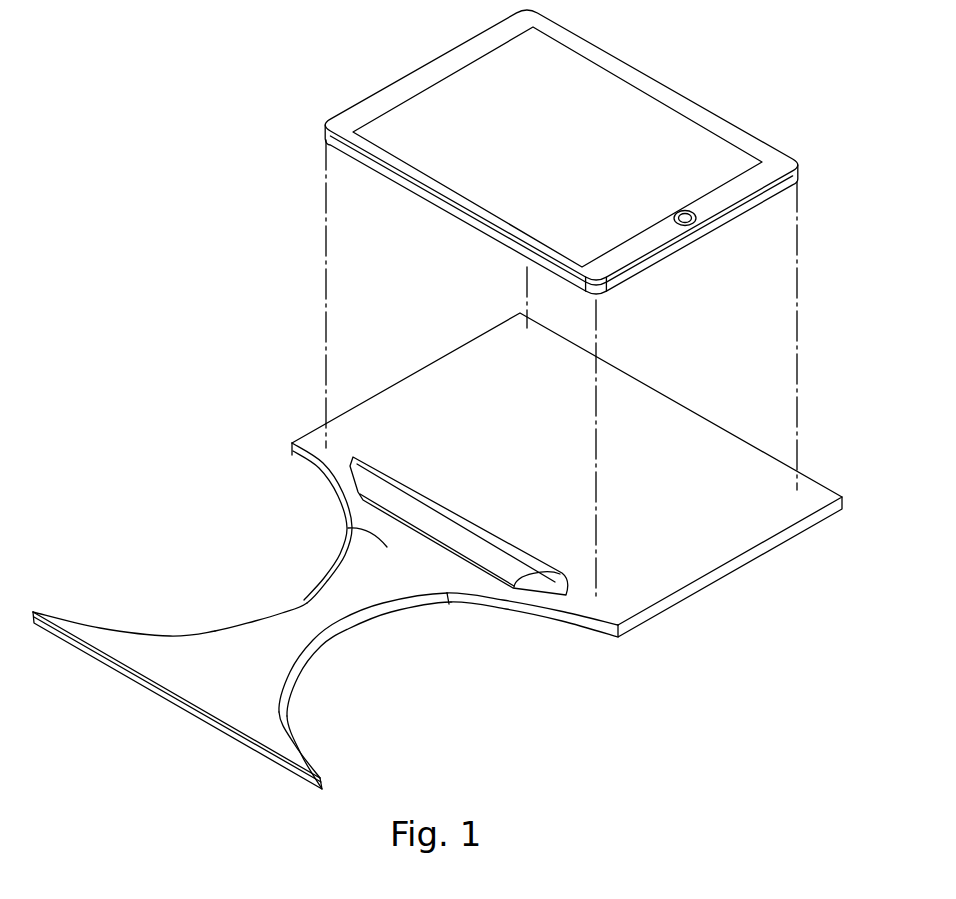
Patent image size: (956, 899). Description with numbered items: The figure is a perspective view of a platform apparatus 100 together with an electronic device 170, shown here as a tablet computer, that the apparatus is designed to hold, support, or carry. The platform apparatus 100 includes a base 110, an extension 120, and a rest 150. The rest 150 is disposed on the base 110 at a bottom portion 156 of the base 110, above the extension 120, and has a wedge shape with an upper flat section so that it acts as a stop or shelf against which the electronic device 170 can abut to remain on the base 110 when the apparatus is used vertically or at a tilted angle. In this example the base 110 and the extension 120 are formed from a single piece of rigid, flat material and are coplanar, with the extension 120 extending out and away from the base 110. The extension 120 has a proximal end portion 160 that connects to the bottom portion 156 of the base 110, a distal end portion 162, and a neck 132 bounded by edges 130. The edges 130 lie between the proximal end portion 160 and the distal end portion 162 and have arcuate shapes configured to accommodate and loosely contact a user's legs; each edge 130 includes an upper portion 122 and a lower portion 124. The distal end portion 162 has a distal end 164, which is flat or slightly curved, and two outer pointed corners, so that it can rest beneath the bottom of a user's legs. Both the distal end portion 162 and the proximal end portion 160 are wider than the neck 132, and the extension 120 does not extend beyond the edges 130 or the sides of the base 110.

The platform apparatus 100 is at (206, 64).
The base 110 is at (688, 410).
The extension 120 is at (362, 695).
The upper portion 122 is at (321, 463).
The lower portion 124 is at (112, 630).
The edges 130 is at (260, 617).
The neck 132 is at (308, 603).
The rest 150 is at (447, 518).
The bottom portion 156 is at (623, 608).
The proximal end portion 160 is at (348, 530).
The distal end portion 162 is at (210, 695).
The distal end 164 is at (122, 668).
The electronic device 170 is at (657, 89).